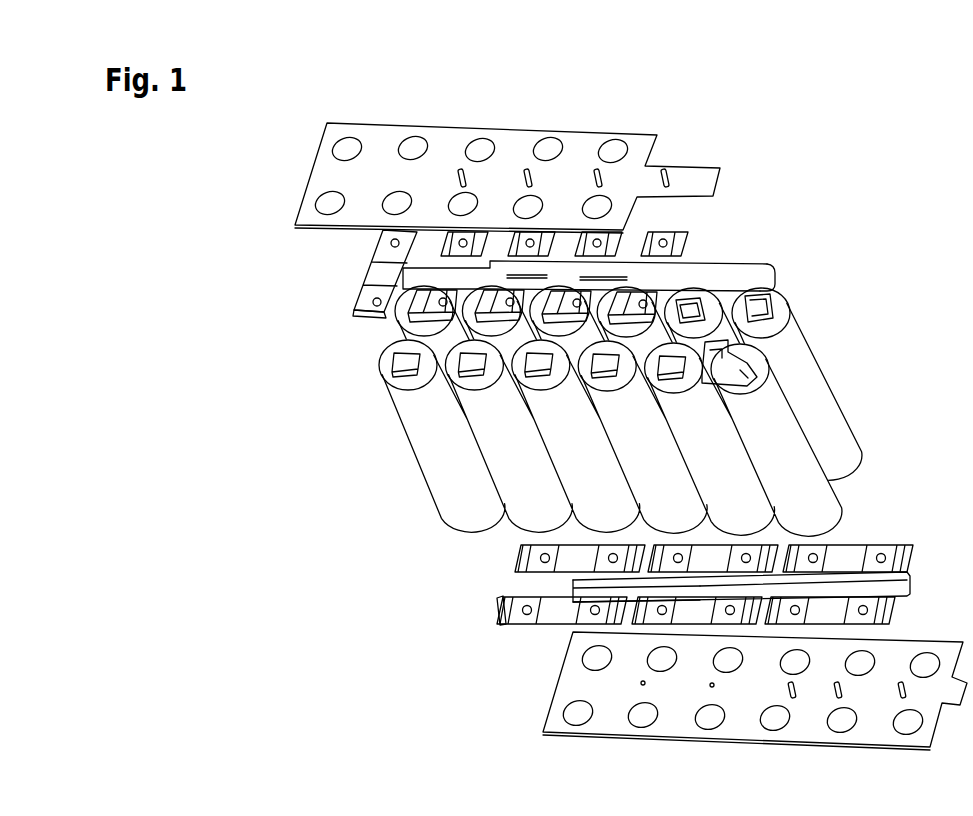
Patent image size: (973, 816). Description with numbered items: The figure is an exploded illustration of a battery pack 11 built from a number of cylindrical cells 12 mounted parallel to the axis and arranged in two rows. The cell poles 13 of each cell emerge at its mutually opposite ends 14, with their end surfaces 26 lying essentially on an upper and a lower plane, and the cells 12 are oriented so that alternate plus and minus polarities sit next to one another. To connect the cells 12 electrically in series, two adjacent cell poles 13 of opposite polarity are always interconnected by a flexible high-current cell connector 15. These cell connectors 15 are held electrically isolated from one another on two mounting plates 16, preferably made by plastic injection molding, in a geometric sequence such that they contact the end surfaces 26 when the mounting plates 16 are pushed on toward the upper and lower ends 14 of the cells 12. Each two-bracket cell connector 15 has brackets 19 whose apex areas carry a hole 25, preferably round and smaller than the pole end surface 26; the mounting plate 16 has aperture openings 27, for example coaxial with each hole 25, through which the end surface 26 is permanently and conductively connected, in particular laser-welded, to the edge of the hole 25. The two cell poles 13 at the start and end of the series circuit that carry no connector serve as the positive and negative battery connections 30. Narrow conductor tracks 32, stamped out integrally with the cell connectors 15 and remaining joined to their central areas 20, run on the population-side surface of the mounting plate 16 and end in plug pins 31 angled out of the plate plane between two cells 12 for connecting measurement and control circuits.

The battery pack 11 is at (320, 433).
The cylindrical cells 12 is at (407, 333).
The cell poles 13 is at (403, 365).
The ends 14 is at (416, 308).
The cell connector 15 is at (372, 283).
The mounting plate 16 is at (327, 165).
The brackets 19 is at (820, 543).
The central areas 20 is at (378, 262).
The hole 25 is at (364, 296).
The end surfaces 26 is at (438, 385).
The aperture openings 27 is at (552, 150).
The battery connections 30 is at (772, 367).
The plug pins 31 is at (769, 278).
The conductor tracks 32 is at (733, 270).